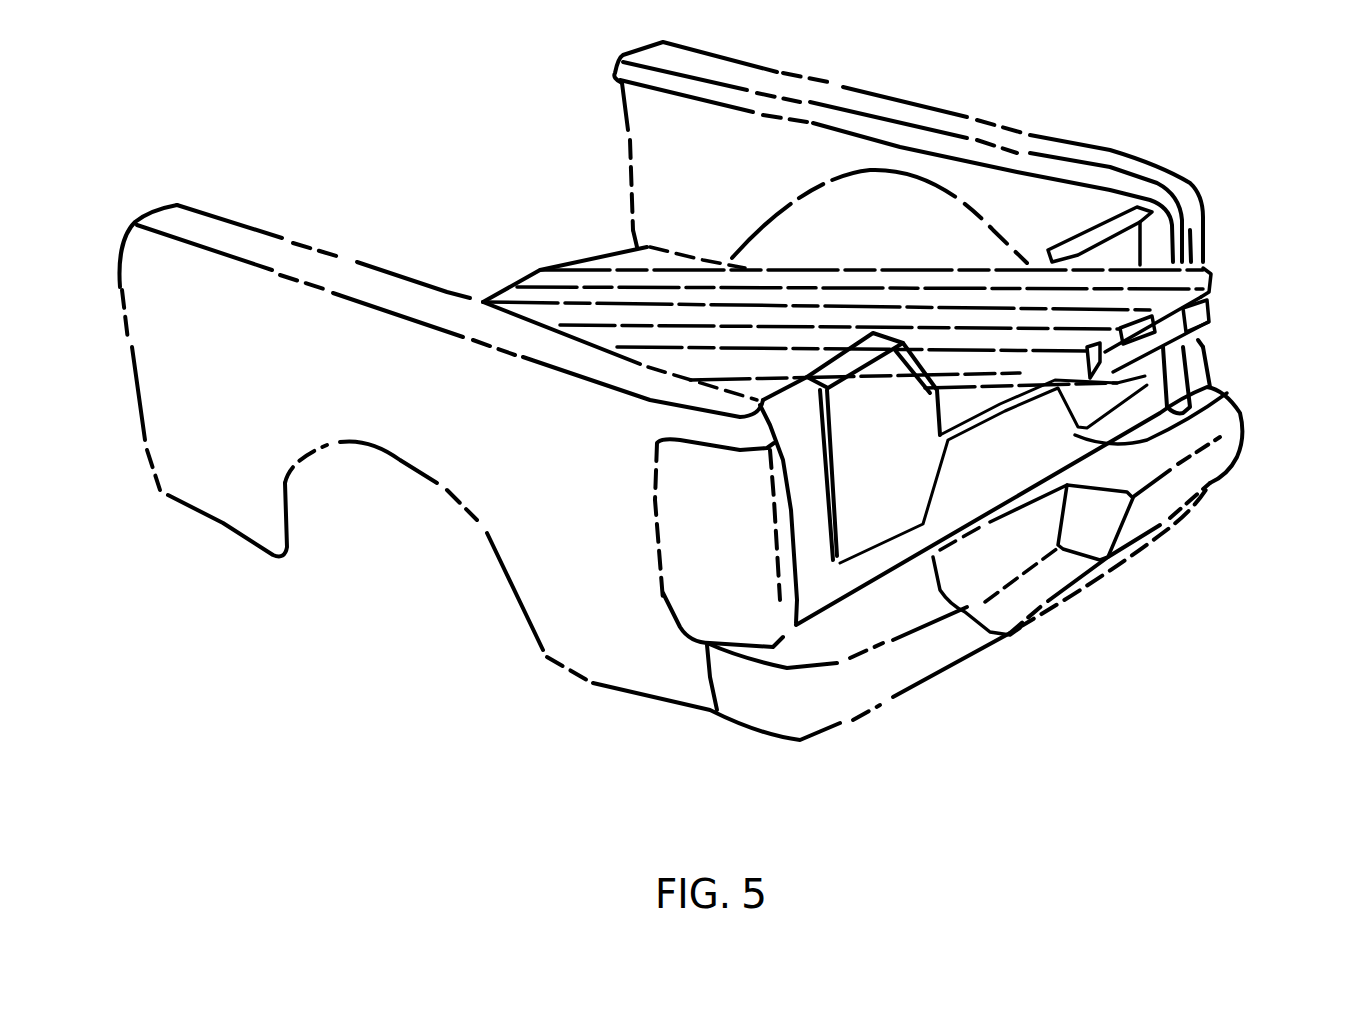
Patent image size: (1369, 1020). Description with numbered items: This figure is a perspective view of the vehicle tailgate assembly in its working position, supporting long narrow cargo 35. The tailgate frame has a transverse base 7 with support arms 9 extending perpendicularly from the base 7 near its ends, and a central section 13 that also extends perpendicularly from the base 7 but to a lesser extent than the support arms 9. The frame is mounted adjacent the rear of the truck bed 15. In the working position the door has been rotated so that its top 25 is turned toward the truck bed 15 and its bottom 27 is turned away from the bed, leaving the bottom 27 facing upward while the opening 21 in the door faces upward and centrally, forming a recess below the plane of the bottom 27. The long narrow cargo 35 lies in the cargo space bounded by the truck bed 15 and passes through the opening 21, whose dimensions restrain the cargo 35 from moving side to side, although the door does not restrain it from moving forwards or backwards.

The transverse base 7 is at (893, 547).
The support arms 9 is at (813, 543).
The central section 13 is at (1033, 437).
The truck bed 15 is at (643, 260).
The opening 21 is at (1040, 262).
The top of the door 25 is at (1083, 407).
The bottom of the door 27 is at (1087, 243).
The long narrow cargo 35 is at (1083, 300).